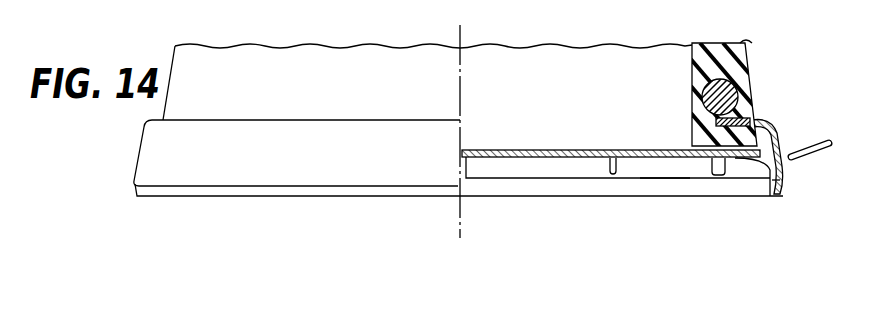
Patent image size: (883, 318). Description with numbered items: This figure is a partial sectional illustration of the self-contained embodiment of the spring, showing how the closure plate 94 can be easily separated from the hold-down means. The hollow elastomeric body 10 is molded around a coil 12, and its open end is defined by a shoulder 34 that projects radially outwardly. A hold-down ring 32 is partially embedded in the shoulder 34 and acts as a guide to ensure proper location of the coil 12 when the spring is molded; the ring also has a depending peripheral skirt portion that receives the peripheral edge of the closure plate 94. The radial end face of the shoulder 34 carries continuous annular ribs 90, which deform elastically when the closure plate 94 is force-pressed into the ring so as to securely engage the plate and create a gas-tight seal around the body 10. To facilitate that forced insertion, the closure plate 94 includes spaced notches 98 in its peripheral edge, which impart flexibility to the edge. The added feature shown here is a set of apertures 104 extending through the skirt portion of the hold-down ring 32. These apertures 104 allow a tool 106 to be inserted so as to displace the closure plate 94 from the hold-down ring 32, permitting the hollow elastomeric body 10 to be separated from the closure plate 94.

The hollow elastomeric body 10 is at (748, 62).
The coil 12 is at (752, 90).
The shoulder 34 is at (755, 121).
The hold-down ring 32 is at (777, 129).
The tool 106 is at (814, 158).
The apertures 104 is at (782, 168).
The notches 98 is at (613, 160).
The closure plate 94 is at (663, 158).
The annular ribs 90 is at (740, 165).